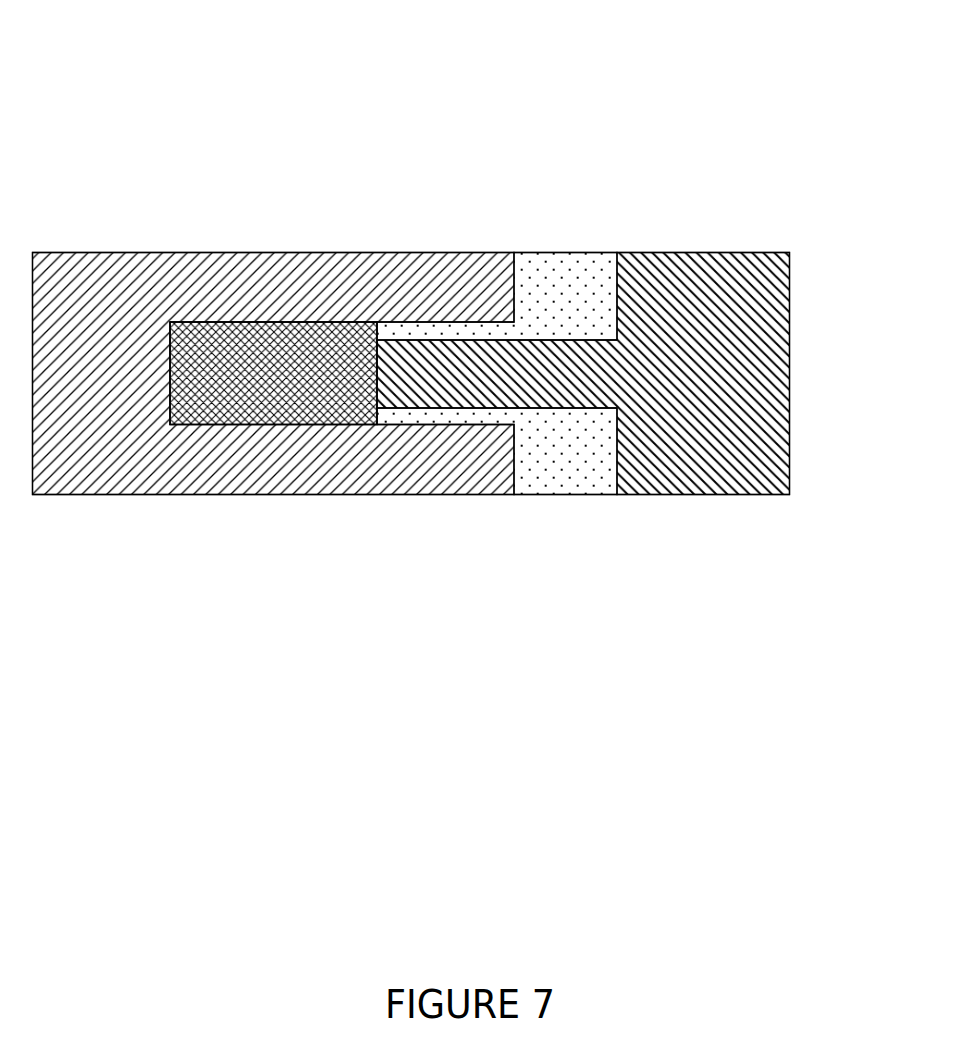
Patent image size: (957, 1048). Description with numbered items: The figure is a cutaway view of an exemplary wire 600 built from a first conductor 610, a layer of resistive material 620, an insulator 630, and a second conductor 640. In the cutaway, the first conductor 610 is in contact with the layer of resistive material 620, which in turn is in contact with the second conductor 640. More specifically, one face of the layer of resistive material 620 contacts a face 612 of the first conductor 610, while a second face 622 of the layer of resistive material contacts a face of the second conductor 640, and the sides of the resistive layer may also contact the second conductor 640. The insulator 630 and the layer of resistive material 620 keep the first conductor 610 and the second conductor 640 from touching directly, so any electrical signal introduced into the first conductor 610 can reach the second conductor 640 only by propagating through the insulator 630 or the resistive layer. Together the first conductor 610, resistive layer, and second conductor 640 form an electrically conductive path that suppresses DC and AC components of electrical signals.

The wire 600 is at (114, 66).
The first conductor 610 is at (657, 252).
The face of the first conductor 612 is at (377, 378).
The layer of resistive material 620 is at (262, 322).
The second face of the layer of resistive material 622 is at (172, 365).
The insulator 630 is at (538, 252).
The second conductor 640 is at (74, 252).